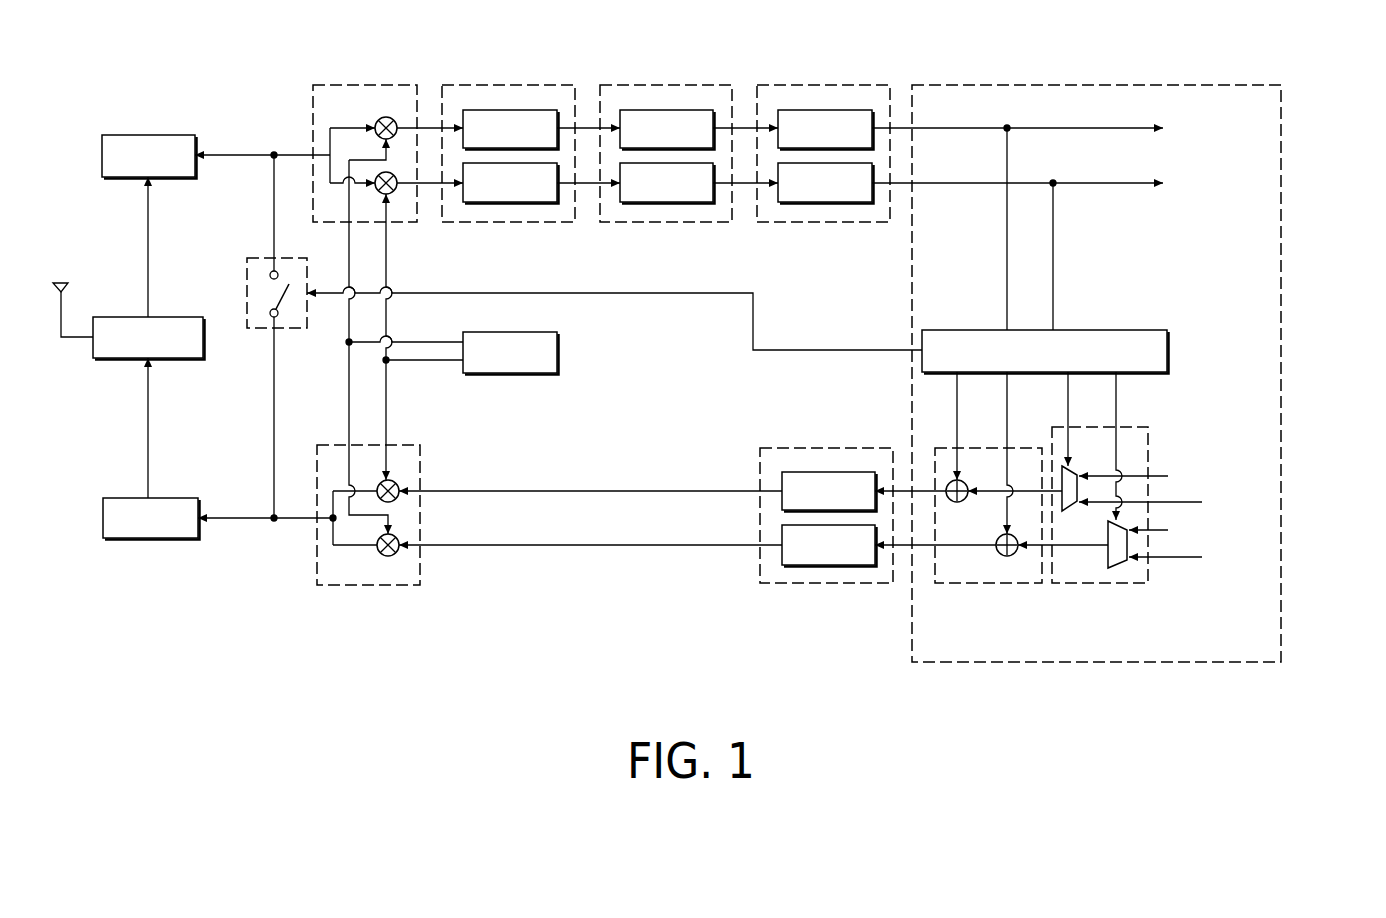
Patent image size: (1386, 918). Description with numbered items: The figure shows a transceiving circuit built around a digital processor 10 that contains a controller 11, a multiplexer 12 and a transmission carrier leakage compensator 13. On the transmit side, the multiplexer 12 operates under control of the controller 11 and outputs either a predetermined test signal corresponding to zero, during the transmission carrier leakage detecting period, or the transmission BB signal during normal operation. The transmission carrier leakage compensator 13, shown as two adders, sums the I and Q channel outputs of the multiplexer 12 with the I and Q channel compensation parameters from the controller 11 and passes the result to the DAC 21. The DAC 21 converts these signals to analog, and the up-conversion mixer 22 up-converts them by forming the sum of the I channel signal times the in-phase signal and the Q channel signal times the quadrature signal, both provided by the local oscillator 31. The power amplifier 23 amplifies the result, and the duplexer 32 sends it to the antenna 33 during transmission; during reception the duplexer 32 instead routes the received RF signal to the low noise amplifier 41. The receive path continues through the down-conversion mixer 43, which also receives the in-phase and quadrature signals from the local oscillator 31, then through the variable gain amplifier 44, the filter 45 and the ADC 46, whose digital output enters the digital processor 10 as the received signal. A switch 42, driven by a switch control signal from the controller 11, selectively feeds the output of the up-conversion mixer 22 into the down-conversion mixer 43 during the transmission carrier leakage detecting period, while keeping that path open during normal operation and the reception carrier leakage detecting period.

The digital processor 10 is at (1090, 83).
The controller 11 is at (1122, 328).
The multiplexer 12 is at (1105, 588).
The transmission carrier leakage compensator 13 is at (990, 588).
The DAC 21 is at (828, 588).
The up-conversion mixer 22 is at (370, 588).
The power amplifier 23 is at (153, 540).
The local oscillator 31 is at (559, 350).
The duplexer 32 is at (185, 360).
The antenna 33 is at (62, 281).
The low noise amplifier 41 is at (147, 133).
The switch 42 is at (244, 266).
The down-conversion mixer 43 is at (365, 83).
The variable gain amplifier 44 is at (505, 83).
The filter 45 is at (663, 83).
The ADC 46 is at (822, 83).